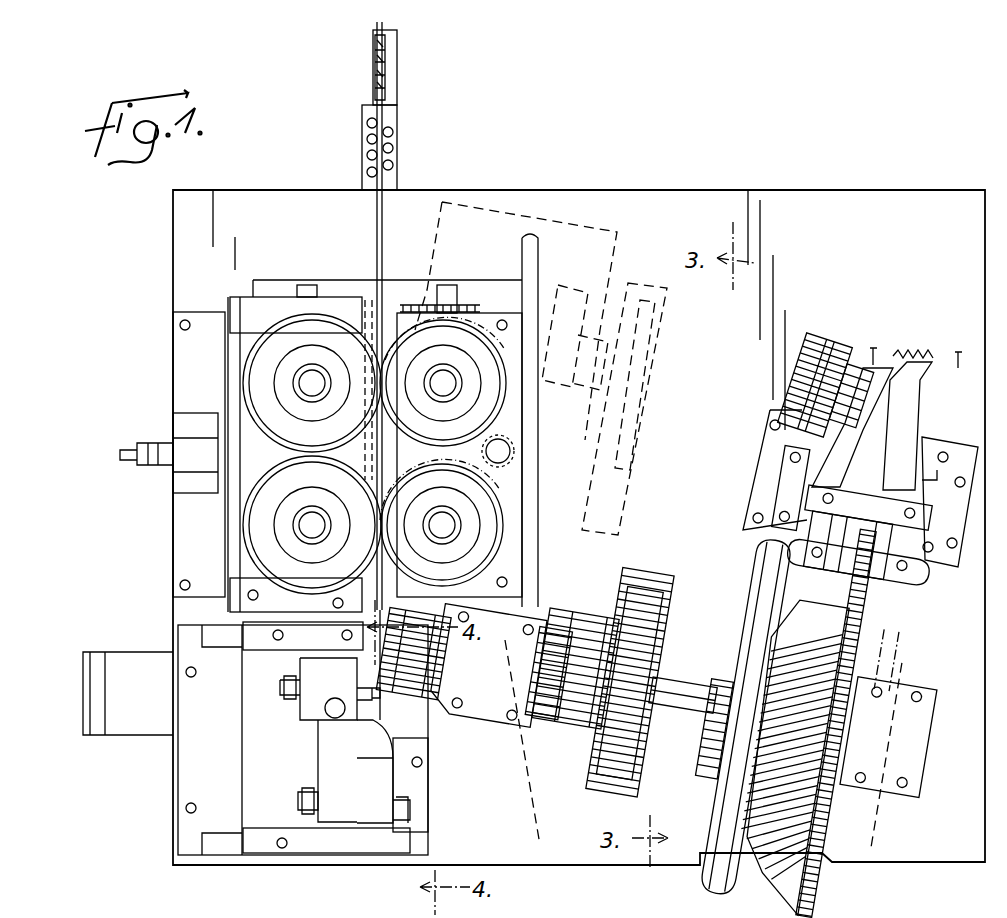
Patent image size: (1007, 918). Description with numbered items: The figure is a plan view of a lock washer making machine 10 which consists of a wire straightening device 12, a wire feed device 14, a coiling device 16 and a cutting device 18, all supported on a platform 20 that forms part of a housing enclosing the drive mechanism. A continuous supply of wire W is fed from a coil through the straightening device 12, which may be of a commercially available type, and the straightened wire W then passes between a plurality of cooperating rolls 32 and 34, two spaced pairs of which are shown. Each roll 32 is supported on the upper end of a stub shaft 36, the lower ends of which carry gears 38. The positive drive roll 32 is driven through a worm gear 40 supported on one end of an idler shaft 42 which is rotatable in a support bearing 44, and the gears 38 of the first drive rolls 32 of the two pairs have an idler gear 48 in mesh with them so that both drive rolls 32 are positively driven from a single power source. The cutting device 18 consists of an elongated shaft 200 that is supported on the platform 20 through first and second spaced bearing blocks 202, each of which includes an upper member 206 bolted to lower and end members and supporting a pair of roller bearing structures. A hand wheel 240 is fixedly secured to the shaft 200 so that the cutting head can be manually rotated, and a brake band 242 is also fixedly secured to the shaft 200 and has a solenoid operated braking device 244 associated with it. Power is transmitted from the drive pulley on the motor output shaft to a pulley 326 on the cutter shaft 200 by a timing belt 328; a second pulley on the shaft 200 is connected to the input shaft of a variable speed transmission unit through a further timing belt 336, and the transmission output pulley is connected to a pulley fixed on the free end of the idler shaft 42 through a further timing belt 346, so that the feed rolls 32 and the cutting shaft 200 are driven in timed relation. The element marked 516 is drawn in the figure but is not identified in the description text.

The lock washer making machine 10 is at (554, 124).
The wire straightening device 12 is at (341, 110).
The wire W is at (362, 238).
The wire feed device 14 is at (136, 368).
The coiling device 16 is at (265, 741).
The cutting device 18 is at (533, 768).
The platform 20 is at (900, 256).
The rolls (drive rolls) 32 is at (422, 335).
The rolls 34 is at (262, 352).
The stub shaft 36 is at (305, 377).
The gears 38 is at (390, 330).
The worm gear 40 is at (516, 321).
The idler shaft 42 is at (624, 388).
The support bearing 44 is at (575, 310).
The idler gear 48 is at (513, 437).
The elongated shaft (cutter shaft) 200 is at (693, 690).
The bearing blocks 202 is at (468, 748).
The upper member 206 is at (510, 688).
The hand wheel 240 is at (760, 555).
The brake band 242 is at (854, 588).
The solenoid operated braking device 244 is at (958, 376).
The pulley 326 is at (612, 580).
The timing belt 328 is at (707, 718).
The timing belt 336 is at (548, 745).
The timing belt 346 is at (648, 385).
The bending gear 516 is at (841, 345).